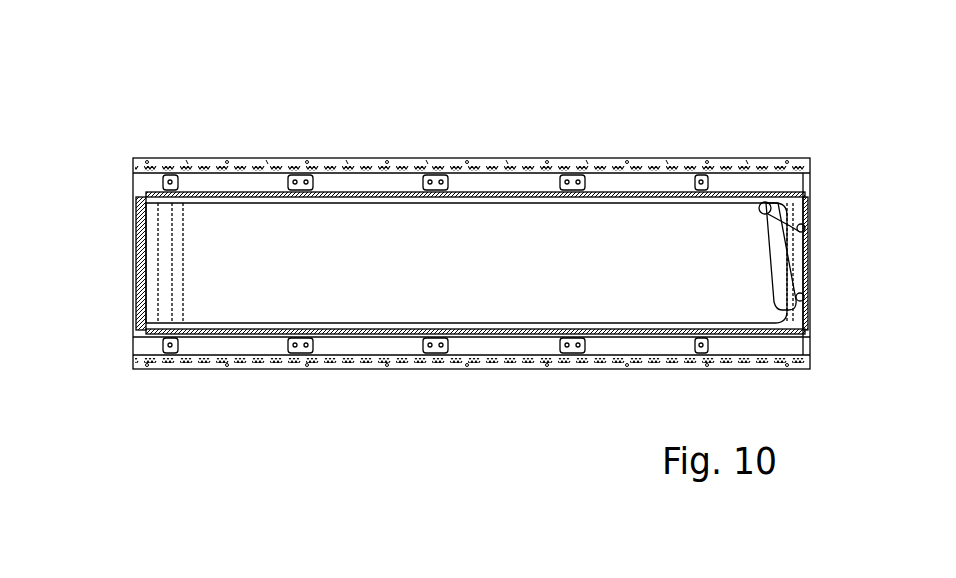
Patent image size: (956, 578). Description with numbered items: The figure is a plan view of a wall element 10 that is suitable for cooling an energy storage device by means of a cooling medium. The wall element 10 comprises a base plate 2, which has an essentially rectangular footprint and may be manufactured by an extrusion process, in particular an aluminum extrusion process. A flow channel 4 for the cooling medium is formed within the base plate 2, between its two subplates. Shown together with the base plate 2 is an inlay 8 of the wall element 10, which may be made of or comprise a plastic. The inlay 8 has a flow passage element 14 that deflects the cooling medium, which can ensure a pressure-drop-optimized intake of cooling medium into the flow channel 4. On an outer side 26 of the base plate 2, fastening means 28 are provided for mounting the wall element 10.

The base plate 2 is at (637, 170).
The flow channel 4 is at (405, 222).
The inlay 8 is at (309, 222).
The wall element 10 is at (217, 108).
The flow passage element 14 is at (775, 205).
The outer side 26 is at (144, 151).
The fastening means 28 is at (143, 370).